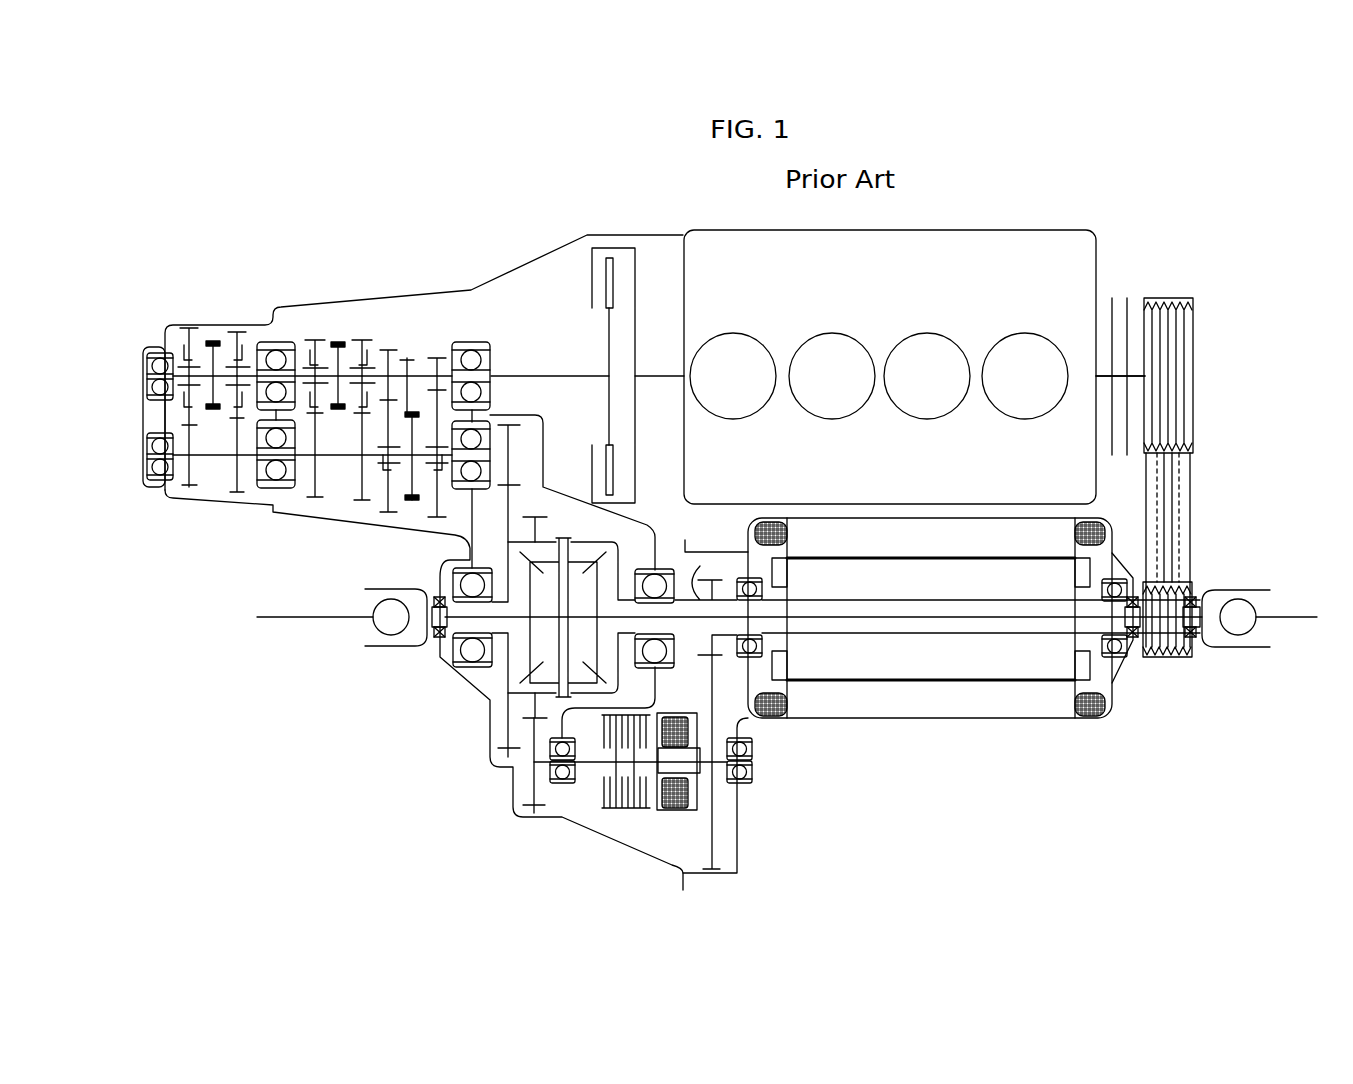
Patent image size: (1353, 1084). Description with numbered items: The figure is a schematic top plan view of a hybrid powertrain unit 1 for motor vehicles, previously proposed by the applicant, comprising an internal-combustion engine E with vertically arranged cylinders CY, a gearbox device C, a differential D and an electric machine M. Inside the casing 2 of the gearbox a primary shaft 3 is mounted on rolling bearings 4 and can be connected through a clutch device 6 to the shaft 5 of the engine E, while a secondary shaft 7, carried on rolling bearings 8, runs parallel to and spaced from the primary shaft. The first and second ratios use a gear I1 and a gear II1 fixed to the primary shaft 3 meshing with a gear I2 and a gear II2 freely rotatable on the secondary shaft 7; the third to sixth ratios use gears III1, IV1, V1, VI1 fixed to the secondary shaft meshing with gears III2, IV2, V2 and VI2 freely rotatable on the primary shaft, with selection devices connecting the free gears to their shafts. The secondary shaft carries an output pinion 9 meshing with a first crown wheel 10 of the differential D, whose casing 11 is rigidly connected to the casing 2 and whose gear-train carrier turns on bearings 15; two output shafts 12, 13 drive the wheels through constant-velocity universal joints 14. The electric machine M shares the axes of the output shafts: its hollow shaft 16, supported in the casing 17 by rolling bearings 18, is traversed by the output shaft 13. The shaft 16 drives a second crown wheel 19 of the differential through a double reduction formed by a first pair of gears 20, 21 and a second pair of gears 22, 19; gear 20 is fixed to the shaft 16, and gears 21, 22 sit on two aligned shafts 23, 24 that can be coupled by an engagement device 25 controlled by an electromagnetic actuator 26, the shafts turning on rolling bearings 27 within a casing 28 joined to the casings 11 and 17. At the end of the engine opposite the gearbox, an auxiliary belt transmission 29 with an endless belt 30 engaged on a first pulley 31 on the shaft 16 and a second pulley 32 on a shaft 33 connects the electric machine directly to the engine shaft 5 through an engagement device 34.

The hybrid powertrain unit 1 is at (268, 190).
The casing of the gearbox 2 is at (440, 290).
The primary shaft 3 is at (530, 374).
The rolling bearings 4 is at (152, 365).
The shaft of the engine 5 is at (655, 372).
The clutch device 6 is at (635, 268).
The secondary shaft 7 is at (210, 457).
The rolling bearings 8 is at (148, 462).
The output pinion 9 is at (512, 436).
The first crown wheel 10 is at (515, 510).
The casing of the differential 11 is at (492, 730).
The output shaft 12 is at (458, 620).
The output shaft 13 is at (1015, 622).
The constant-velocity universal joints 14 is at (392, 618).
The bearings 15 is at (474, 580).
The shaft of the electric machine 16 is at (855, 590).
The casing of the electric machine 17 is at (885, 718).
The rolling bearings 18 is at (750, 590).
The second crown wheel 19 is at (540, 530).
The gear 20 is at (712, 575).
The gear 21 is at (712, 690).
The gear 22 is at (530, 790).
The shaft 23 is at (718, 766).
The shaft 24 is at (590, 765).
The engagement device 25 is at (630, 810).
The electromagnetic actuator 26 is at (680, 795).
The rolling bearings 27 is at (562, 770).
The casing of the gear-reduction transmission 28 is at (670, 868).
The auxiliary belt transmission 29 is at (1205, 500).
The endless belt 30 is at (1175, 548).
The first pulley 31 is at (1175, 660).
The second pulley 32 is at (1180, 360).
The shaft 33 is at (1130, 378).
The engagement device 34 is at (1115, 298).
The internal-combustion engine E is at (1085, 268).
The cylinders CY is at (800, 343).
The gearbox device C is at (150, 378).
The differential D is at (490, 680).
The electric machine M is at (945, 690).
The gear VI2 is at (186, 340).
The gear VI1 is at (190, 488).
The gear V2 is at (243, 345).
The gear V1 is at (235, 490).
The gear IV2 is at (318, 333).
The gear IV1 is at (318, 427).
The gear III2 is at (362, 333).
The gear III1 is at (358, 487).
The gear II1 is at (401, 350).
The gear II2 is at (386, 500).
The gear I1 is at (437, 355).
The gear I2 is at (435, 515).